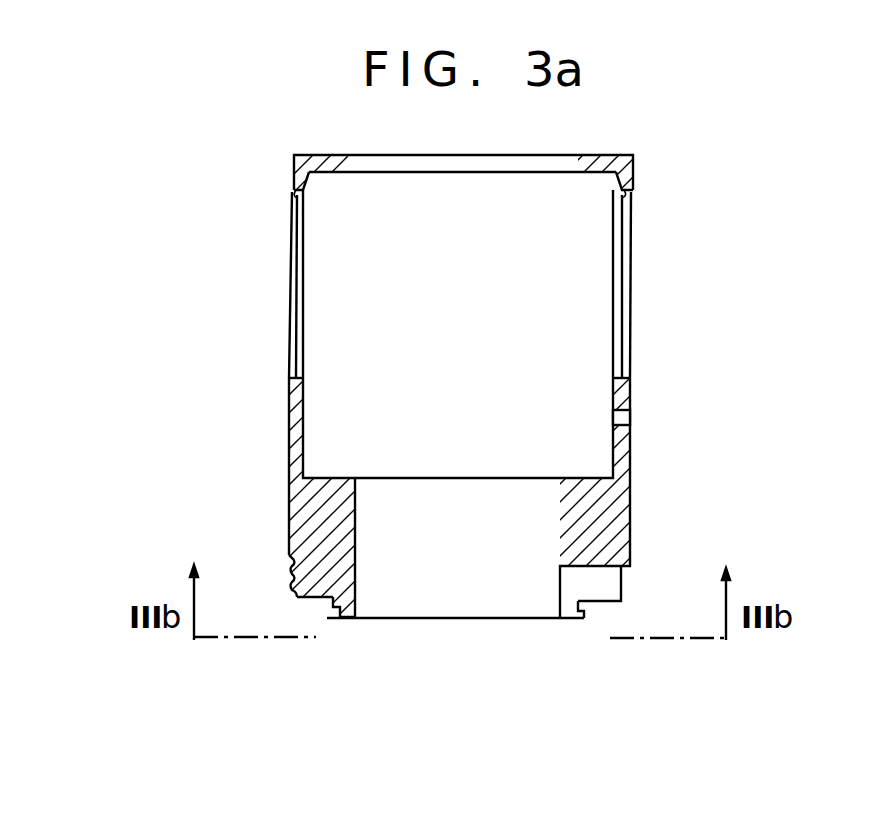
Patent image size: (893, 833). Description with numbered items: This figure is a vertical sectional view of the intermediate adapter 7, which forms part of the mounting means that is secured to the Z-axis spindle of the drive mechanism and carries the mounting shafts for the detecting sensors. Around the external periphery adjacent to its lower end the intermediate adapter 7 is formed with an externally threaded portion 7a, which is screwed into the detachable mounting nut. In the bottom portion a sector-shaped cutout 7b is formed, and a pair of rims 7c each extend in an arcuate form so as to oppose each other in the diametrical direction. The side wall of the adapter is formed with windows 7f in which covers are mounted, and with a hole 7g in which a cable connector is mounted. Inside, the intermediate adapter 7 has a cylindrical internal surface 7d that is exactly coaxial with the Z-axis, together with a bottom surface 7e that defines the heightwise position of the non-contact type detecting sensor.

The intermediate adapter 7 is at (632, 476).
The externally threaded portion 7a is at (292, 578).
The sector-shaped cutout 7b is at (608, 585).
The rims 7c is at (323, 619).
The cylindrical internal surface 7d is at (355, 590).
The bottom surface 7e is at (581, 620).
The windows 7f is at (631, 280).
The hole 7g is at (630, 418).